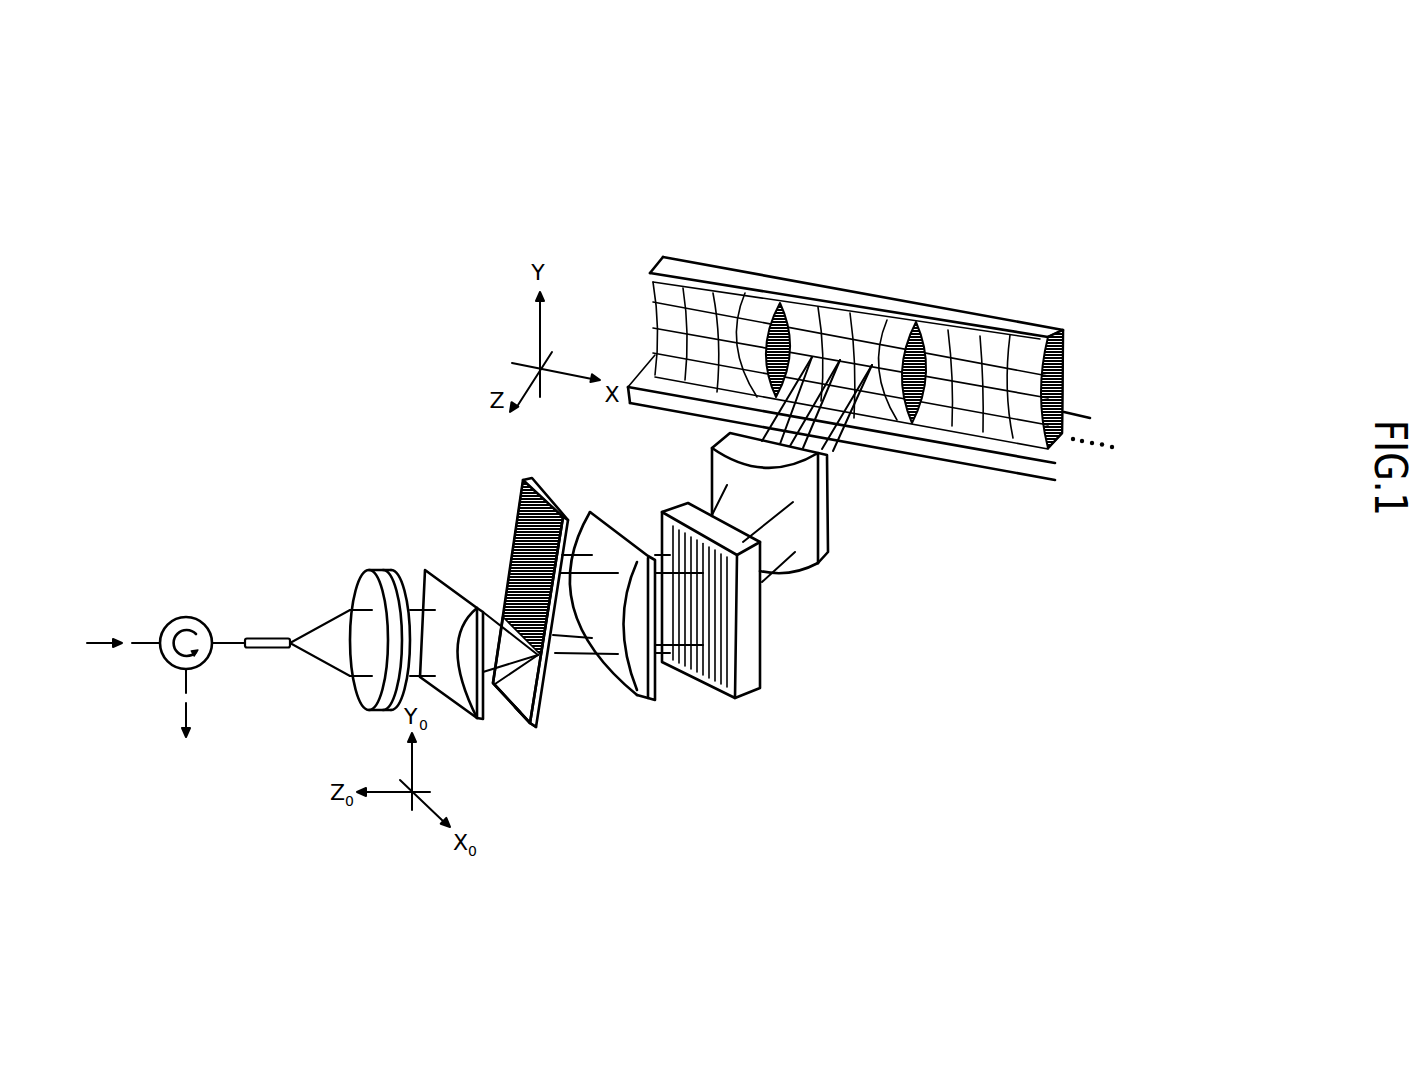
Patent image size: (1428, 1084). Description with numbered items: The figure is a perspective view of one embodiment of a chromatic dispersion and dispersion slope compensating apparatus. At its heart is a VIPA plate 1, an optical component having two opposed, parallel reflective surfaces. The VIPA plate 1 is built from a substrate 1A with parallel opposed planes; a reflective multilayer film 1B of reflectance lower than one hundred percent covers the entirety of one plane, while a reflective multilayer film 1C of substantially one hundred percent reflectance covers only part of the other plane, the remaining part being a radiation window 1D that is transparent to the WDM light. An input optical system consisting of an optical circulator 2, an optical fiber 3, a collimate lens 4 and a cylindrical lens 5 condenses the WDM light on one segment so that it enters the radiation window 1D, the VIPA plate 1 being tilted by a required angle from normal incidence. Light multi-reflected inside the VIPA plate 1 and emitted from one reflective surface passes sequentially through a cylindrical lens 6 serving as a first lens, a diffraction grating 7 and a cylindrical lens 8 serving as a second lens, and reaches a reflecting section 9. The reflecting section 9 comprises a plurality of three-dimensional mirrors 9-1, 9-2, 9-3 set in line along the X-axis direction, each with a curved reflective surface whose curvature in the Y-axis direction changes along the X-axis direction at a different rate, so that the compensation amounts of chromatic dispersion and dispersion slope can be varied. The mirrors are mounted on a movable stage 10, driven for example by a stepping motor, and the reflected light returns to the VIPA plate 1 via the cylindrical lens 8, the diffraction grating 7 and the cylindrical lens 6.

The VIPA plate 1 is at (487, 486).
The substrate 1A is at (537, 729).
The reflective multilayer film 1B is at (555, 662).
The reflective multilayer film 1C is at (512, 572).
The radiation window 1D is at (518, 684).
The optical circulator 2 is at (187, 617).
The optical fiber 3 is at (262, 637).
The collimate lens 4 is at (375, 570).
The cylindrical lens 5 is at (437, 579).
The cylindrical lens 6 is at (590, 511).
The diffraction grating 7 is at (671, 509).
The cylindrical lens 8 is at (803, 572).
The reflecting section 9 is at (908, 235).
The three-dimensional mirror 9-1 is at (718, 266).
The three-dimensional mirror 9-2 is at (848, 291).
The three-dimensional mirror 9-3 is at (993, 317).
The movable stage 10 is at (960, 465).